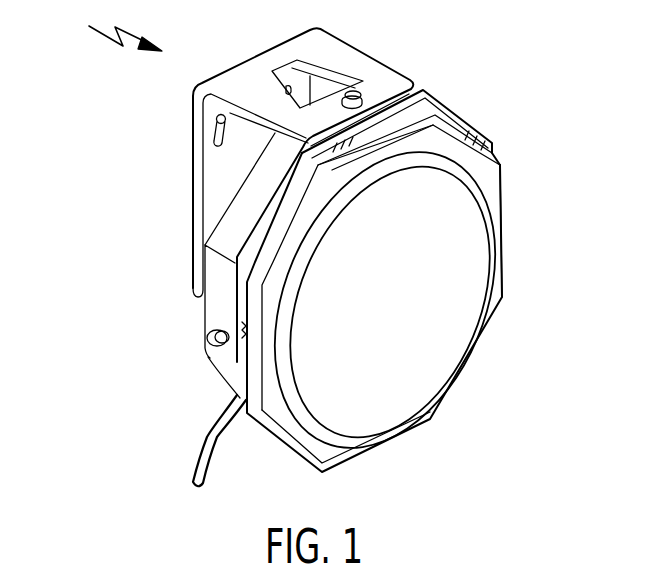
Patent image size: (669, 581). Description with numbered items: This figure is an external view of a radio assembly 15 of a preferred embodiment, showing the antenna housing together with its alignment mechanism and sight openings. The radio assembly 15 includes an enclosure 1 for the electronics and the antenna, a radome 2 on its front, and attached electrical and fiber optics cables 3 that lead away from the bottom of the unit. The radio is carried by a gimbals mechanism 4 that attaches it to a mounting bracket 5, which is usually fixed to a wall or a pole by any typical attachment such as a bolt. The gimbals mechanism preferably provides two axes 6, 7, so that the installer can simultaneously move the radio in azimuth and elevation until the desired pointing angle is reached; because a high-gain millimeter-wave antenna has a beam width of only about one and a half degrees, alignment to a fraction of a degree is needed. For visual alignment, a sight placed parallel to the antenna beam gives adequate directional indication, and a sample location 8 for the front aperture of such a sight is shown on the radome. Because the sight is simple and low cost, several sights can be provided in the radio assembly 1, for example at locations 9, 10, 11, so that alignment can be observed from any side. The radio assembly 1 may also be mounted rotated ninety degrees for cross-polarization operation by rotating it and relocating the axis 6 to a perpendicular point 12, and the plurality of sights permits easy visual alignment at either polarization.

The enclosure 1 is at (228, 368).
The radome 2 is at (482, 276).
The electrical and fiber optics cables 3 is at (190, 461).
The gimbals mechanism 4 is at (215, 284).
The mounting bracket 5 is at (232, 160).
The axis 6 is at (210, 343).
The axis 7 is at (357, 90).
The sample location for a front aperture of a sight 8 is at (317, 343).
The sight location 9 is at (397, 205).
The sight location 10 is at (480, 262).
The sight location 11 is at (388, 403).
The perpendicular point 12 is at (430, 103).
The radio assembly 15 is at (111, 25).